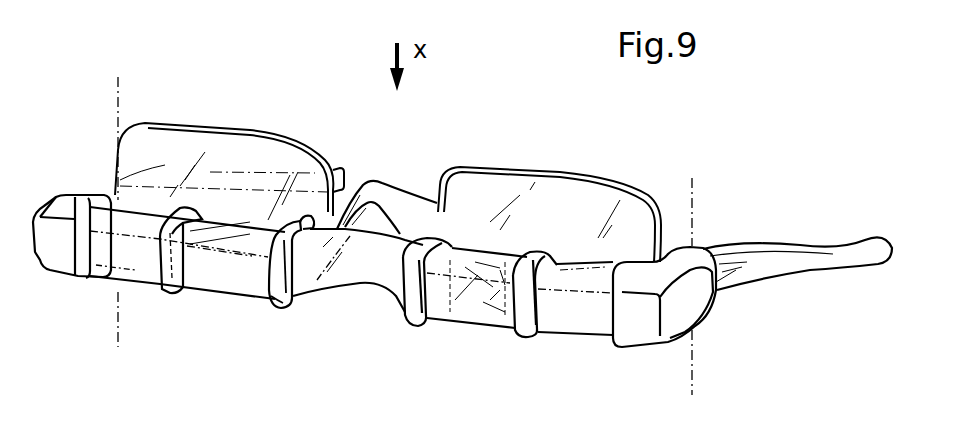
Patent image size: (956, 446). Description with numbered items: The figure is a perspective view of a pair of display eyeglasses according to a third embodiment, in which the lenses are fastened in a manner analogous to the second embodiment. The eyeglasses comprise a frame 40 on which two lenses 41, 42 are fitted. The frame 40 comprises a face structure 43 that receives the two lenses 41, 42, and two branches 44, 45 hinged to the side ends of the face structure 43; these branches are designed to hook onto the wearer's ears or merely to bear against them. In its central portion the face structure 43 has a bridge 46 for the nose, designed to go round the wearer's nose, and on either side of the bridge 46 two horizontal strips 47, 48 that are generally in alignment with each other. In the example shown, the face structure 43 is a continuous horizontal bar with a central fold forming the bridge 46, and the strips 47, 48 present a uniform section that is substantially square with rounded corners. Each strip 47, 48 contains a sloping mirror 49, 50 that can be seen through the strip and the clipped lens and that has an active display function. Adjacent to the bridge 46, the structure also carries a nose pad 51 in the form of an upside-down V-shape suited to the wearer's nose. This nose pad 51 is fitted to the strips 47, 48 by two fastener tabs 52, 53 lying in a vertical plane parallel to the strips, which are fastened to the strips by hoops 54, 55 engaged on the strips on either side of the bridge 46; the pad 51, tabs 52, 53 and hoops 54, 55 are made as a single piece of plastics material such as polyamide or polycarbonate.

The frame 40 is at (107, 286).
The lens 41 is at (172, 138).
The lens 42 is at (583, 186).
The face structure 43 is at (588, 318).
The branch 44 is at (336, 167).
The branch 45 is at (805, 263).
The bridge 46 is at (363, 278).
The horizontal strip 47 is at (143, 270).
The horizontal strip 48 is at (557, 323).
The sloping mirror 49 is at (200, 274).
The sloping mirror 50 is at (493, 300).
The nose pad 51 is at (397, 183).
The fastener tab 52 is at (303, 292).
The fastener tab 53 is at (417, 233).
The hoop 54 is at (271, 290).
The hoop 55 is at (407, 318).